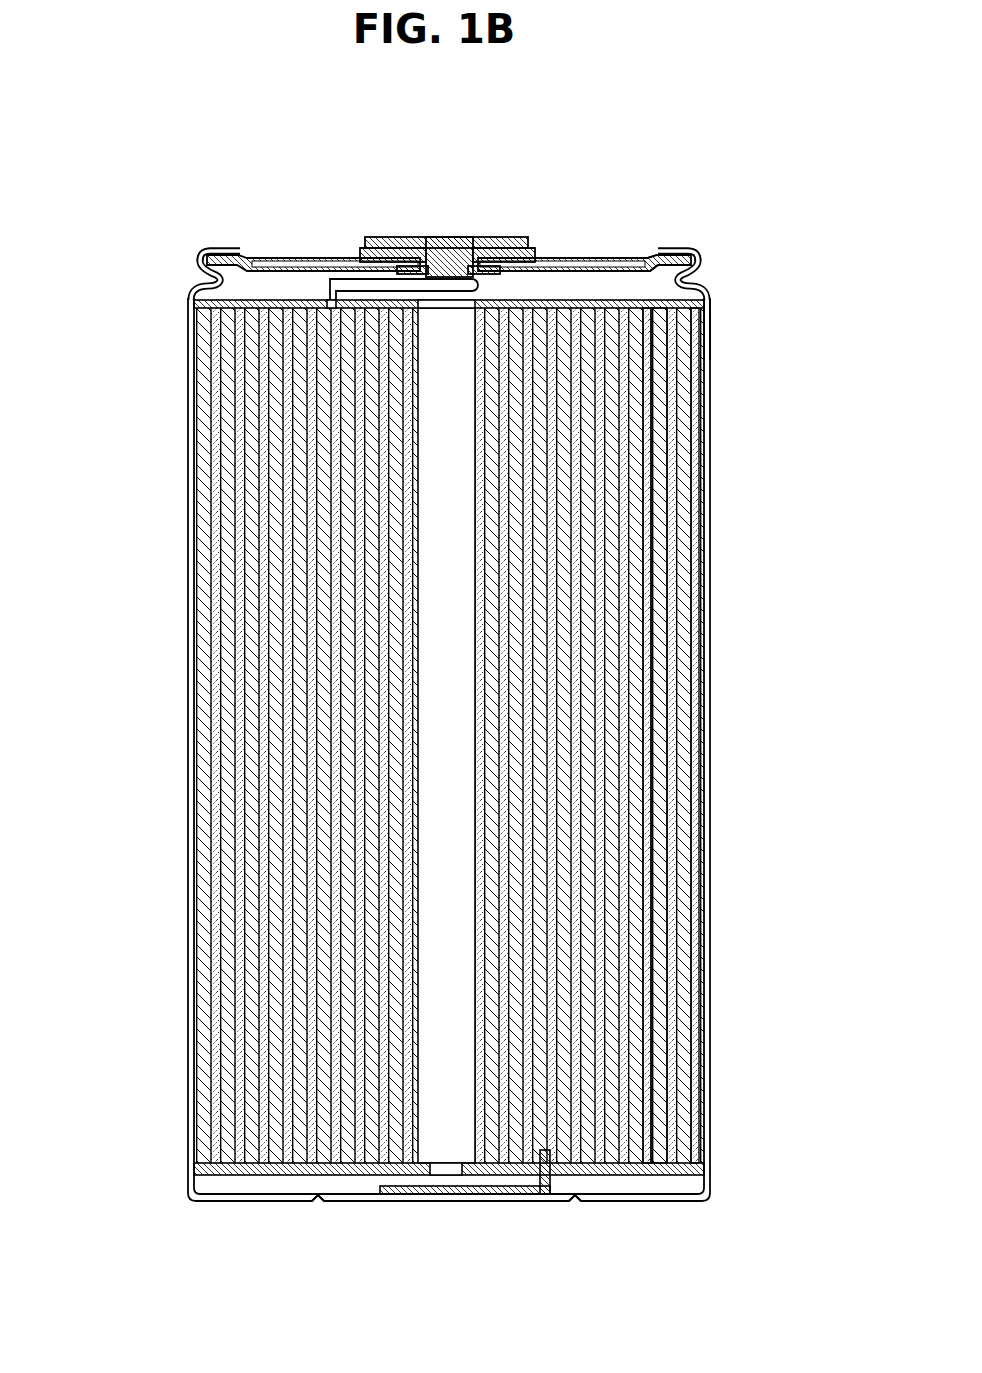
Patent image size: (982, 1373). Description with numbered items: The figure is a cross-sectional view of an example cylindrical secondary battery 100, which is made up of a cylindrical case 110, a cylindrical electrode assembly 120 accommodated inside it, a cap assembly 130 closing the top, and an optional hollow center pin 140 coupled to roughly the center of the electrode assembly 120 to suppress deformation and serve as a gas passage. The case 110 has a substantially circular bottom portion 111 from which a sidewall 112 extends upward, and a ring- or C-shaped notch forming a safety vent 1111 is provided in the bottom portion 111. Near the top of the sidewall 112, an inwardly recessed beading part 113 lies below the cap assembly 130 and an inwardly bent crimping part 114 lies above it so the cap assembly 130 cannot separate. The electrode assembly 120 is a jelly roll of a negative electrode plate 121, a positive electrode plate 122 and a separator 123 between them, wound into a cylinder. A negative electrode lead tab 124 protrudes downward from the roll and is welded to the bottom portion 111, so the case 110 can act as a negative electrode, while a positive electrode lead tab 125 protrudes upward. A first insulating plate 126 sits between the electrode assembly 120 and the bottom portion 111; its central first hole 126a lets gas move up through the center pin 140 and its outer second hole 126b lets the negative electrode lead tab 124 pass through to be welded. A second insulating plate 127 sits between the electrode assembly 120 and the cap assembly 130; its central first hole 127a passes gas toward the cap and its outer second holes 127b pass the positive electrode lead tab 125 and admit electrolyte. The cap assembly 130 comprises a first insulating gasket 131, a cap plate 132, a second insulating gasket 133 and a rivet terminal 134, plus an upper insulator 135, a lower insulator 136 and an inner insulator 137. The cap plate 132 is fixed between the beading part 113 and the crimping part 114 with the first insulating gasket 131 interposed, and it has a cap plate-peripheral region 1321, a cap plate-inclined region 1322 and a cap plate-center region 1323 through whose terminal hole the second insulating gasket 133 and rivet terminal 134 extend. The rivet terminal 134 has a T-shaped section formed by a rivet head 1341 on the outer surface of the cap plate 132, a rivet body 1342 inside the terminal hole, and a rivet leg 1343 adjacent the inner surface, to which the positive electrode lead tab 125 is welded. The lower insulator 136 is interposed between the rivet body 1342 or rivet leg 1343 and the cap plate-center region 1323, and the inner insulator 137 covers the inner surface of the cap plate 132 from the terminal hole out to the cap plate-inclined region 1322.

The secondary battery 100 is at (112, 160).
The cylindrical case 110 is at (148, 987).
The bottom portion 111 is at (288, 1205).
The safety vent 1111 is at (320, 1205).
The sidewall 112 is at (186, 1093).
The beading part 113 is at (200, 285).
The crimping part 114 is at (212, 250).
The electrode assembly 120 is at (716, 948).
The negative electrode plate 121 is at (705, 1080).
The positive electrode plate 122 is at (676, 378).
The separator 123 is at (696, 484).
The negative electrode lead tab 124 is at (513, 1205).
The positive electrode lead tab 125 is at (482, 285).
The first insulating plate 126 is at (228, 1205).
The first hole 126a is at (440, 1205).
The second hole 126b is at (555, 1205).
The second insulating plate 127 is at (225, 303).
The first hole 127a is at (440, 350).
The second holes 127b is at (283, 278).
The cap assembly 130 is at (702, 228).
The first insulating gasket 131 is at (712, 292).
The cap plate-peripheral region 1321 is at (705, 255).
The cap plate 132 is at (618, 240).
The cap plate-inclined region 1322 is at (655, 256).
The cap plate-center region 1323 is at (578, 258).
The second insulating gasket 133 is at (522, 246).
The rivet terminal 134 is at (378, 224).
The rivet head 1341 is at (452, 236).
The rivet body 1342 is at (425, 250).
The rivet leg 1343 is at (490, 248).
The upper insulator 135 is at (362, 250).
The lower insulator 136 is at (335, 268).
The inner insulator 137 is at (712, 325).
The center pin 140 is at (500, 830).